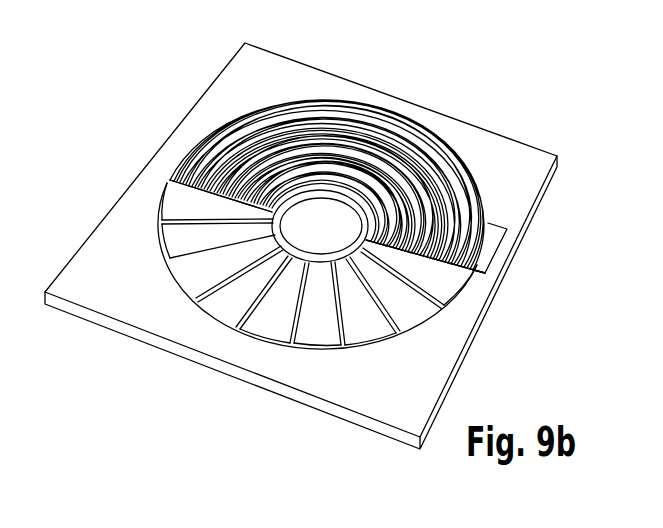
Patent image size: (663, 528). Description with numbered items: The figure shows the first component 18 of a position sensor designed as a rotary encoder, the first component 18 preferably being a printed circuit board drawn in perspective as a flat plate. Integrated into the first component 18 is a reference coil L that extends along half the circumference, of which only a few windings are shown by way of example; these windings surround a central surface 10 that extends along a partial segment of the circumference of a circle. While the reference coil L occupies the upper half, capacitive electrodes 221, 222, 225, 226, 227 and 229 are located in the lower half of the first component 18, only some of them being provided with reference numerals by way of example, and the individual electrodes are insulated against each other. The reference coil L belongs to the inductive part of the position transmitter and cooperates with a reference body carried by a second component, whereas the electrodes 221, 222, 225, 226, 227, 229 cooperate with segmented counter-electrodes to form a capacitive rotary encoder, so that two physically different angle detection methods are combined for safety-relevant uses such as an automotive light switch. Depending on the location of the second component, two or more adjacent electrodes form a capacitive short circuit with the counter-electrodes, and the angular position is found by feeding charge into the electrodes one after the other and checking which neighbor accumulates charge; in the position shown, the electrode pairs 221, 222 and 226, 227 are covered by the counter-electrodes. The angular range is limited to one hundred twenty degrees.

The central surface 10 is at (317, 217).
The reference coil L is at (433, 133).
The first component 18 is at (509, 153).
The capacitive electrode 221 is at (191, 206).
The capacitive electrode 222 is at (192, 238).
The capacitive electrode 225 is at (278, 312).
The capacitive electrode 226 is at (315, 336).
The capacitive electrode 227 is at (366, 326).
The capacitive electrode 229 is at (438, 281).